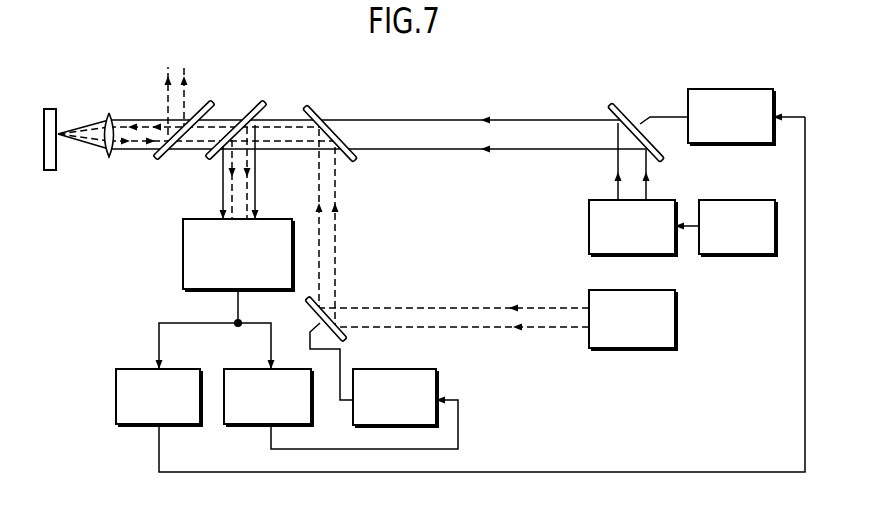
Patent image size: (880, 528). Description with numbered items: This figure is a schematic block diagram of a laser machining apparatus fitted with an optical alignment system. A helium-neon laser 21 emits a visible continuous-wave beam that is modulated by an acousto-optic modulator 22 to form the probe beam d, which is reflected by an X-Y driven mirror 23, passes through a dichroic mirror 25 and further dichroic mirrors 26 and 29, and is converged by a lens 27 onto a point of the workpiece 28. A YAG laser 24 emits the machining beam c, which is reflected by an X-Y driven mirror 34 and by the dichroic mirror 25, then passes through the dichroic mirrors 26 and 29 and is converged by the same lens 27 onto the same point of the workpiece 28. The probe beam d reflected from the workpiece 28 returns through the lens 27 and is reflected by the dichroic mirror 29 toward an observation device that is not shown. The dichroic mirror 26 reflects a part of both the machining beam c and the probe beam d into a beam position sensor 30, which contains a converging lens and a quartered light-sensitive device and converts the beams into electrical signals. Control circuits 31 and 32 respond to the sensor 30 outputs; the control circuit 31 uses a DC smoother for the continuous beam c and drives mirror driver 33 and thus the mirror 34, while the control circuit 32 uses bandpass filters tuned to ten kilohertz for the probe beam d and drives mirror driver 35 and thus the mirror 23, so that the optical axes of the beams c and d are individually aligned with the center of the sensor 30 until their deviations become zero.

The helium-neon laser 21 is at (750, 200).
The acousto-optic modulator 22 is at (602, 200).
The X-Y driven mirror 23 is at (624, 105).
The yttrium aluminum garnet laser 24 is at (603, 290).
The dichroic mirror 25 is at (313, 105).
The dichroic mirror 26 is at (262, 101).
The lens 27 is at (110, 113).
The workpiece 28 is at (55, 109).
The dichroic mirror 29 is at (211, 101).
The beam position sensor 30 is at (183, 249).
The control circuit 31 is at (246, 369).
The control circuit 32 is at (128, 369).
The mirror driver 33 is at (430, 369).
The X-Y driven mirror 34 is at (346, 338).
The mirror driver 35 is at (710, 90).
The probe beam d is at (500, 121).
The machining beam c is at (417, 307).